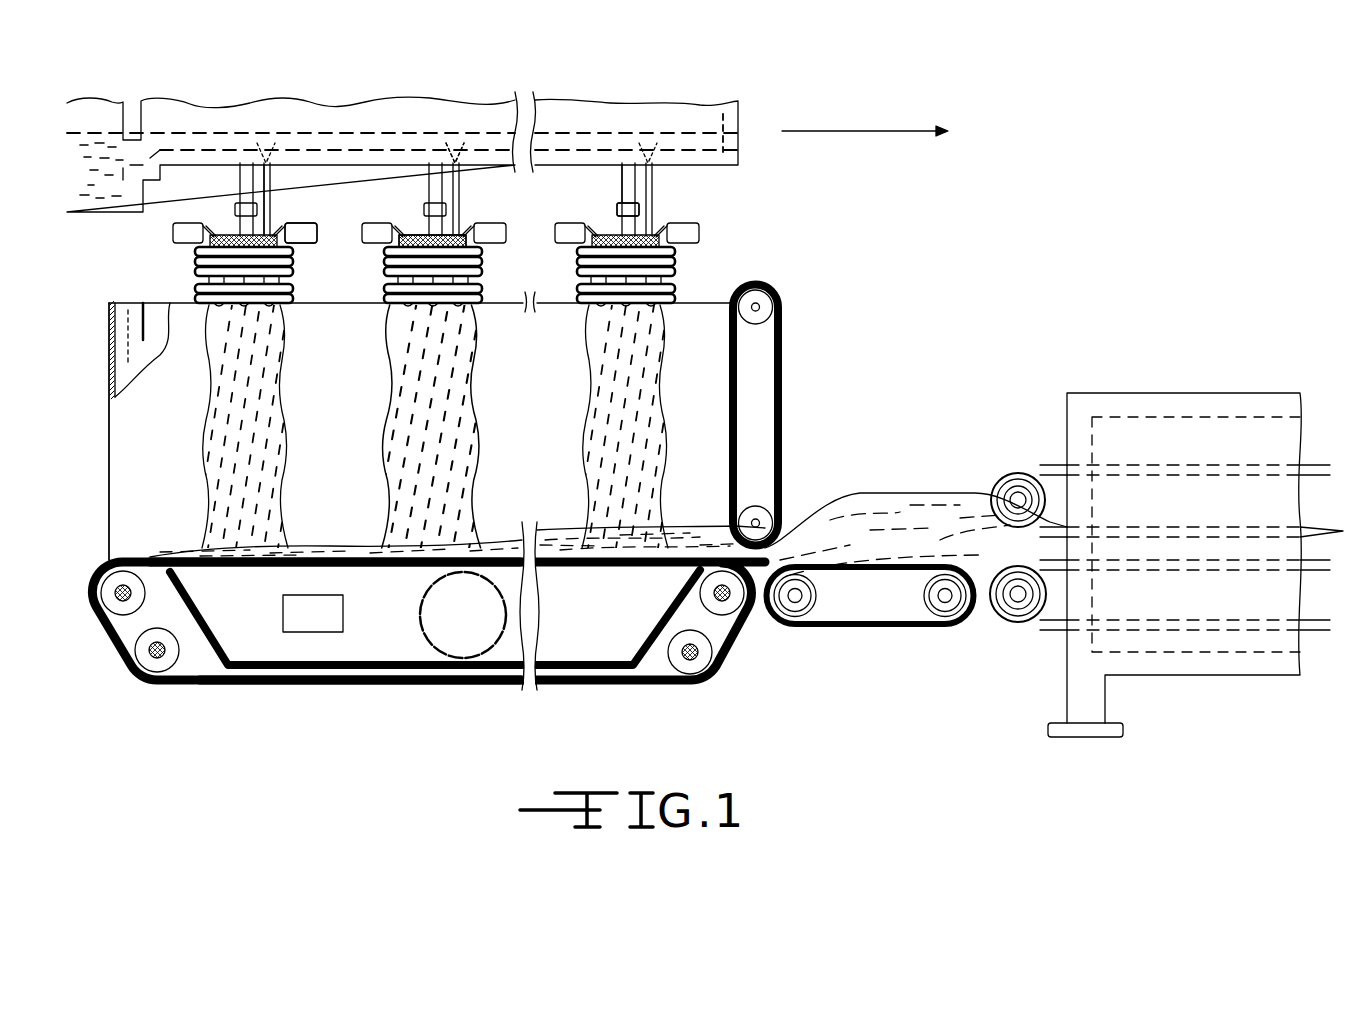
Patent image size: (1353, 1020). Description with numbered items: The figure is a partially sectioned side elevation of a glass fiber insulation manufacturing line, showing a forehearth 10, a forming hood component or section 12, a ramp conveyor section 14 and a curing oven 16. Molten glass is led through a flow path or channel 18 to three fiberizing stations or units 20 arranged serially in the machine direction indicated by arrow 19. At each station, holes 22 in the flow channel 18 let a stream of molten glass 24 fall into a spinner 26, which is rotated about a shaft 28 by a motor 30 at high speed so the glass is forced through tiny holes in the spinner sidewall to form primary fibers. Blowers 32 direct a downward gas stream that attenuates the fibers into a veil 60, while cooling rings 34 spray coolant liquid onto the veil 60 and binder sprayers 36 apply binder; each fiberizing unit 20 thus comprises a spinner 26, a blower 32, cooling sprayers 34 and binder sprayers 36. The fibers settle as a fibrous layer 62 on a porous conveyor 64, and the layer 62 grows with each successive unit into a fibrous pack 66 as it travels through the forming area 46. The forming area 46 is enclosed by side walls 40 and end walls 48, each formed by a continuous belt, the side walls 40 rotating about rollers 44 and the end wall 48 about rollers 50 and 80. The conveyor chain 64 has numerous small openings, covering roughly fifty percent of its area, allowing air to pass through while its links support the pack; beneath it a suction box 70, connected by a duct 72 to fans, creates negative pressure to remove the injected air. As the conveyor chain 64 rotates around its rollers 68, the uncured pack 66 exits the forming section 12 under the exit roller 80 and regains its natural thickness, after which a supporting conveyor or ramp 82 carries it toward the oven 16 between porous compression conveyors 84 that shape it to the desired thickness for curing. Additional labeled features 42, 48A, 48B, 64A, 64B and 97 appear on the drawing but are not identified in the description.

The forehearth 10 is at (645, 91).
The forming hood component or section 12 is at (797, 373).
The ramp conveyor section 14 is at (882, 482).
The curing oven 16 is at (1166, 382).
The flow path or channel 18 is at (178, 144).
The arrow indicating machine direction 19 is at (865, 143).
The fiberizing stations or units 20 is at (230, 211).
The holes 22 is at (460, 160).
The stream of molten glass 24 is at (270, 198).
The spinner 26 is at (418, 242).
The shaft 28 is at (617, 192).
The motor 30 is at (617, 213).
The blowers 32 is at (314, 224).
The cooling rings 34 is at (293, 266).
The binder sprayers 36 is at (293, 292).
The side walls 40 is at (677, 368).
The chamber side wall 42 is at (124, 330).
The rollers 44 is at (150, 300).
The forming area 46 is at (561, 329).
The end walls 48 is at (755, 381).
The belt inner run 48A is at (737, 397).
The belt outer run 48B is at (782, 427).
The roller 50 is at (767, 307).
The veil 60 is at (413, 428).
The fibrous layer 62 is at (326, 548).
The porous conveyor 64 is at (378, 556).
The belt upper run 64A is at (328, 567).
The belt lower run 64B is at (318, 688).
The fibrous pack 66 is at (551, 545).
The rollers 68 is at (142, 656).
The suction box 70 is at (645, 635).
The duct 72 is at (462, 660).
The exit roller 80 is at (762, 520).
The supporting conveyor or ramp 82 is at (864, 593).
The porous compression conveyors 84 is at (1032, 488).
The vacuum box 97 is at (307, 615).